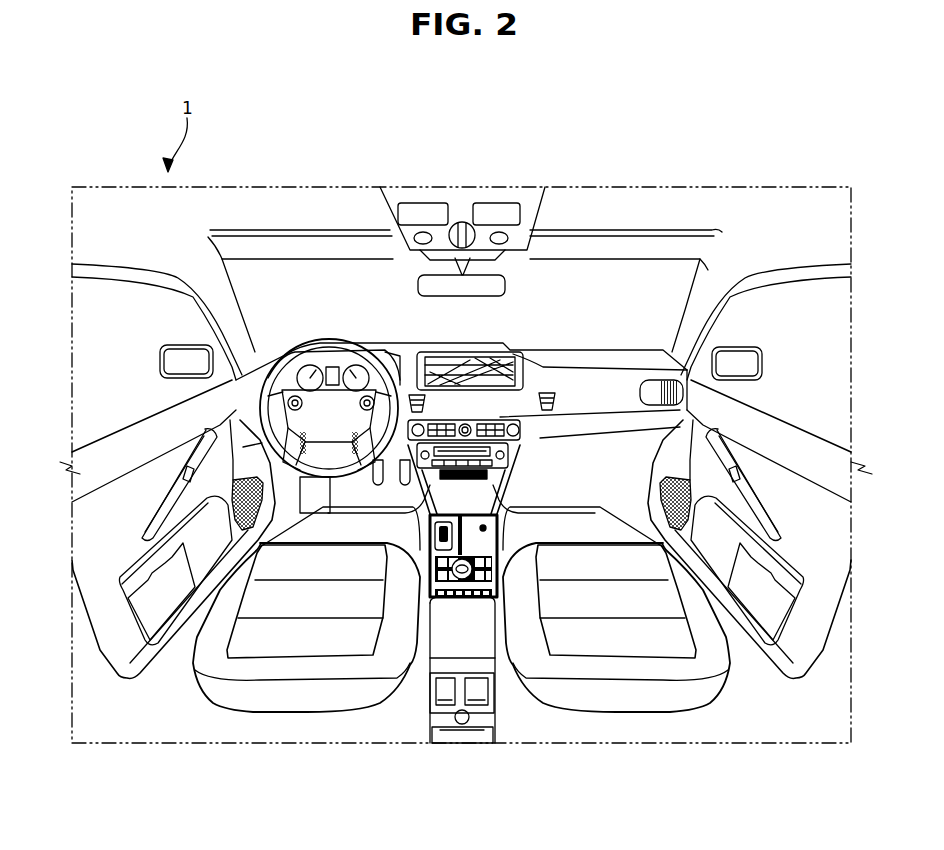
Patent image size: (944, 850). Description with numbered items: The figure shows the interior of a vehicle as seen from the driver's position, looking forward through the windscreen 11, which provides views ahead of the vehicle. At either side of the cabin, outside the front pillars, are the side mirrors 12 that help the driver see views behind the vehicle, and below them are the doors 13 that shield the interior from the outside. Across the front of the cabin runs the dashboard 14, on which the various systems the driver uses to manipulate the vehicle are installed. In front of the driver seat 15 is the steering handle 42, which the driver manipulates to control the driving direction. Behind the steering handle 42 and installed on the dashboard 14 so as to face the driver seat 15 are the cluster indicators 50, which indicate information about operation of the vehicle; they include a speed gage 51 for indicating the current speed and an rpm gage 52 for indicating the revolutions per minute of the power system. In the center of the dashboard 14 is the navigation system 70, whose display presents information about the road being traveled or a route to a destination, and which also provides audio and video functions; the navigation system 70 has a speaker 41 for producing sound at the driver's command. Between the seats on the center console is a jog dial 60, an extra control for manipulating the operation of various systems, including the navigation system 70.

The windscreen 11 is at (288, 278).
The side mirrors 12 is at (168, 364).
The doors 13 is at (95, 528).
The dashboard 14 is at (612, 383).
The driver seat 15 is at (301, 702).
The speaker 41 is at (240, 492).
The steering handle 42 is at (390, 373).
The cluster indicators 50 is at (329, 397).
The speed gage 51 is at (287, 355).
The rpm gage 52 is at (352, 382).
The jog dial 60 is at (465, 555).
The navigation system 70 is at (504, 350).